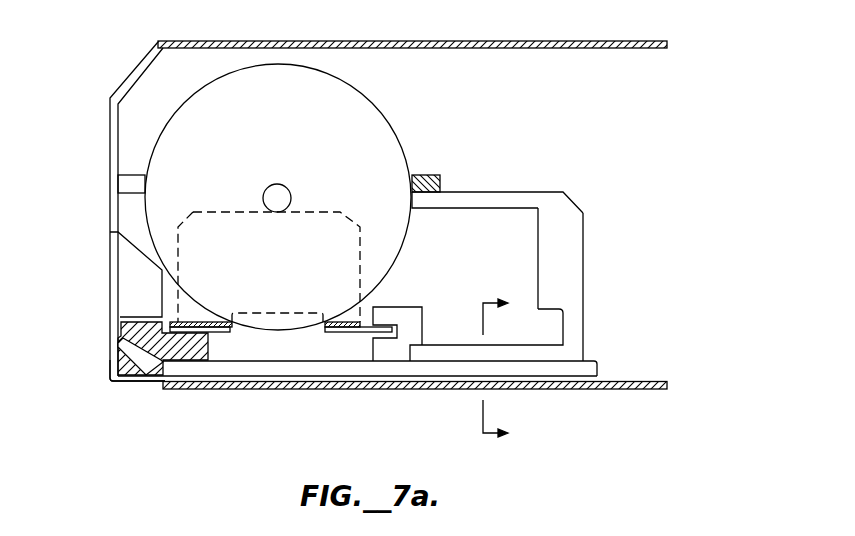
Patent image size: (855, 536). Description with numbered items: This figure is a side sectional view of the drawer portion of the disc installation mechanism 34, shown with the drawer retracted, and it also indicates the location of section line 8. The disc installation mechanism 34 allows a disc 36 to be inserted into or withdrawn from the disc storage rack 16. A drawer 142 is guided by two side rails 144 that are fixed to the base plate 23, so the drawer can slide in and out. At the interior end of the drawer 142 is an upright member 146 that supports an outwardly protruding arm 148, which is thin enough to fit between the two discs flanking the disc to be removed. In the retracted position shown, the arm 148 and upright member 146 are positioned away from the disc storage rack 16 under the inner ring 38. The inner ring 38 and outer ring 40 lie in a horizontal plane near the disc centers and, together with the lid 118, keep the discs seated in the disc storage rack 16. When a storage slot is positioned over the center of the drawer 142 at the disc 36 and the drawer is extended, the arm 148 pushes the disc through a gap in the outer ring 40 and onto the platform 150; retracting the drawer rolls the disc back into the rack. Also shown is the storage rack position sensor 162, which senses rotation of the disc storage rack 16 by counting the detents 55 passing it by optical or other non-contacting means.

The lid 118 is at (264, 41).
The base plate 23 is at (365, 390).
The disc installation mechanism 34 is at (102, 357).
The drawer 142 is at (130, 382).
The side rails 144 is at (597, 361).
The upright member 146 is at (585, 264).
The arm 148 is at (460, 192).
The inner ring 38 is at (432, 175).
The outer ring 40 is at (133, 175).
The disc 36 is at (350, 152).
The storage rack position sensor 162 is at (403, 307).
The detents 55 is at (367, 333).
The disc storage rack 16 is at (218, 333).
The platform 150 is at (140, 321).
The section line 8- 8 is at (495, 370).